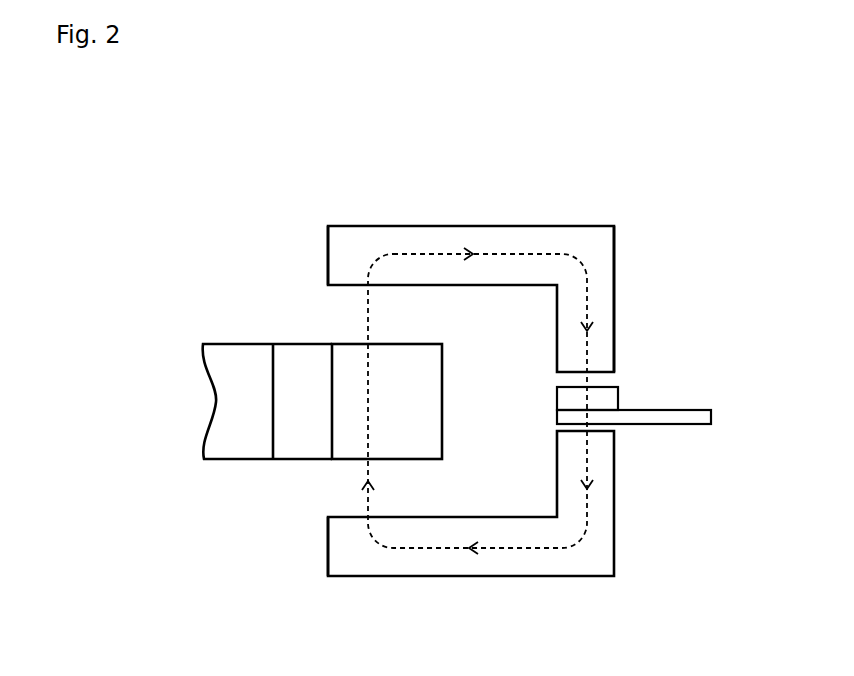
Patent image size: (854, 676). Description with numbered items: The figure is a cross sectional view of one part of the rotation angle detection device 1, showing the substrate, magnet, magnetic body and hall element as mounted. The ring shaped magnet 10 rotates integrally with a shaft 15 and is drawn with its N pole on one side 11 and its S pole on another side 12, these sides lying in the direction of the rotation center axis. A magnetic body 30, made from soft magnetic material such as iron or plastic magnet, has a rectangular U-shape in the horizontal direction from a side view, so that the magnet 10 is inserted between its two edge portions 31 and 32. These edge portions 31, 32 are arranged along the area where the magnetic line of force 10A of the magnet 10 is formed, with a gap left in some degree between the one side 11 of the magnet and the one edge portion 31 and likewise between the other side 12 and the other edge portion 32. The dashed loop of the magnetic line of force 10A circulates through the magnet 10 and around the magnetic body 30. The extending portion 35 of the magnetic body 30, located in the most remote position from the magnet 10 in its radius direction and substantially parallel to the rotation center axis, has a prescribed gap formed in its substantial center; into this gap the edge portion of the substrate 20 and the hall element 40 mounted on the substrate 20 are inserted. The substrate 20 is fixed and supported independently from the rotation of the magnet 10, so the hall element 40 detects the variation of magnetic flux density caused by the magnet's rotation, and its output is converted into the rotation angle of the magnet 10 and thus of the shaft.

The rotation angle detection device 1 is at (508, 170).
The magnet 10 is at (368, 442).
The magnetic line of force 10A is at (515, 552).
The one side of the magnet 11 is at (413, 344).
The another side of the magnet 12 is at (421, 459).
The rotating shaft 15 is at (292, 344).
The substrate 20 is at (680, 425).
The magnetic body 30 is at (618, 242).
The edge portion 31 is at (328, 285).
The edge portion 32 is at (340, 517).
The extending portion 35 is at (616, 298).
The hall element 40 is at (620, 390).